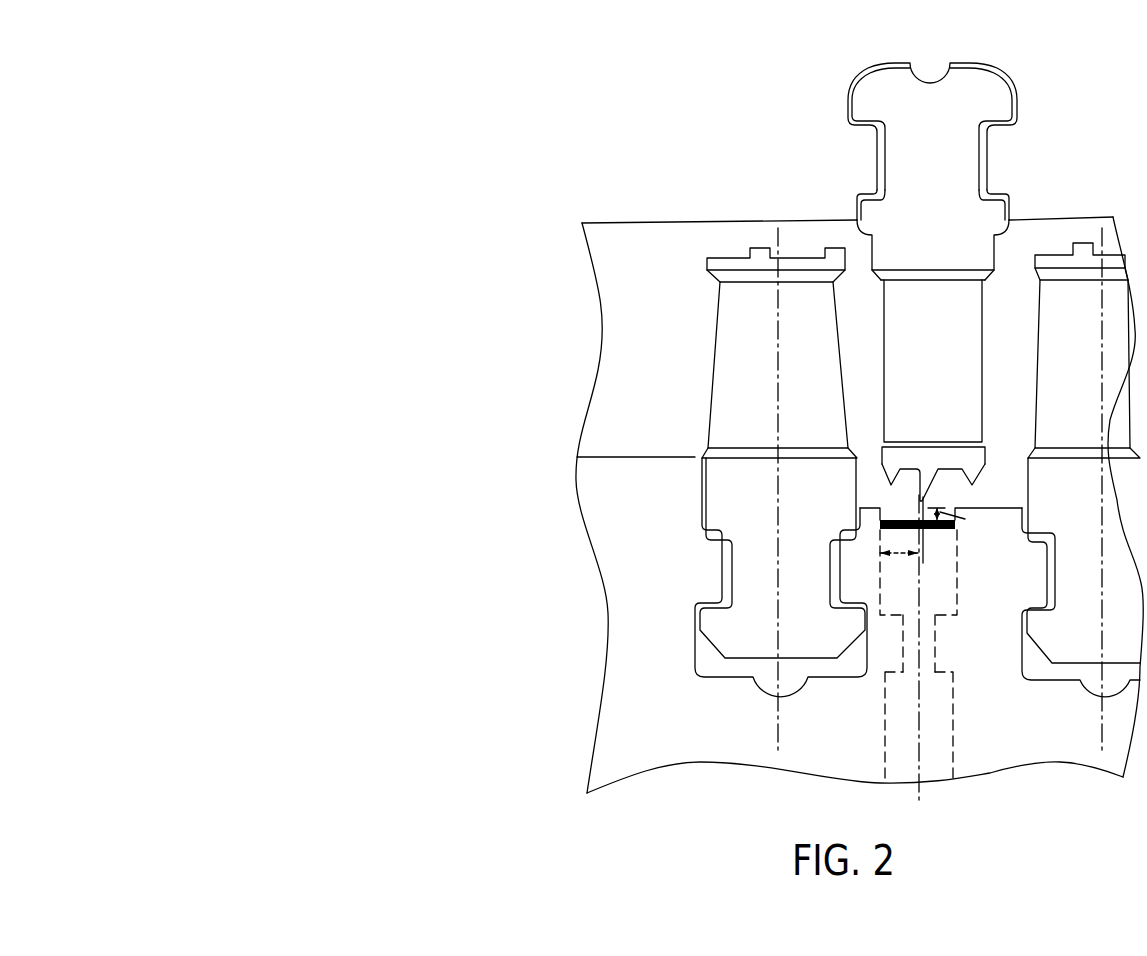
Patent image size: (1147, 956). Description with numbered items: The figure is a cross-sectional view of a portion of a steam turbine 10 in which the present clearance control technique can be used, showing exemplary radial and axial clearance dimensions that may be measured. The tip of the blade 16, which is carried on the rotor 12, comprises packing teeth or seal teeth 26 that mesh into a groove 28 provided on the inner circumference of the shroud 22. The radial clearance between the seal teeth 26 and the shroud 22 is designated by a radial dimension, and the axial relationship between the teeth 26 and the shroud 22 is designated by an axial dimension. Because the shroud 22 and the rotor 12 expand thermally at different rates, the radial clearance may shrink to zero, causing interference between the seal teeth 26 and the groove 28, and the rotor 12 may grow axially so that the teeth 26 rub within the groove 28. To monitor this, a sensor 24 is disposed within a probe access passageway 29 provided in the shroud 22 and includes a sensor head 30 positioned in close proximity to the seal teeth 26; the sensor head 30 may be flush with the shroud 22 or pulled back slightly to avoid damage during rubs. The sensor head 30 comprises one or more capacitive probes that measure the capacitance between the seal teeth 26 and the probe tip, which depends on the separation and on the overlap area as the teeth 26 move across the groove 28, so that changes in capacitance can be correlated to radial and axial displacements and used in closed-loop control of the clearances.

The steam turbine 10 is at (240, 58).
The rotor 12 is at (967, 165).
The blade 16 is at (958, 367).
The shroud 22 is at (843, 563).
The sensor 24 is at (940, 706).
The seal teeth 26 is at (957, 458).
The groove 28 is at (888, 515).
The probe access passageway 29 is at (932, 648).
The sensor head 30 is at (955, 530).